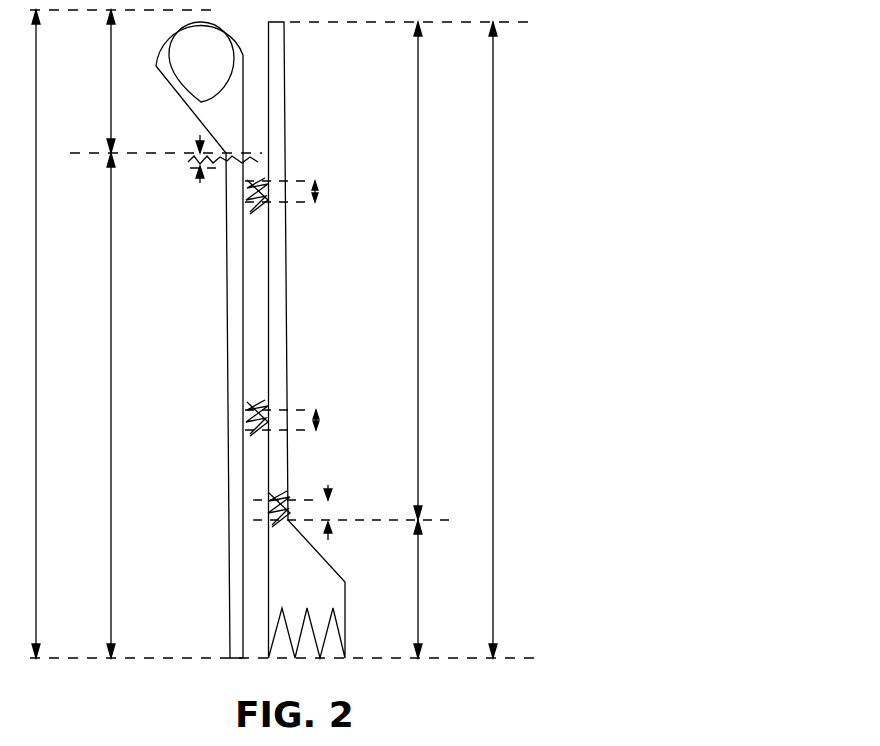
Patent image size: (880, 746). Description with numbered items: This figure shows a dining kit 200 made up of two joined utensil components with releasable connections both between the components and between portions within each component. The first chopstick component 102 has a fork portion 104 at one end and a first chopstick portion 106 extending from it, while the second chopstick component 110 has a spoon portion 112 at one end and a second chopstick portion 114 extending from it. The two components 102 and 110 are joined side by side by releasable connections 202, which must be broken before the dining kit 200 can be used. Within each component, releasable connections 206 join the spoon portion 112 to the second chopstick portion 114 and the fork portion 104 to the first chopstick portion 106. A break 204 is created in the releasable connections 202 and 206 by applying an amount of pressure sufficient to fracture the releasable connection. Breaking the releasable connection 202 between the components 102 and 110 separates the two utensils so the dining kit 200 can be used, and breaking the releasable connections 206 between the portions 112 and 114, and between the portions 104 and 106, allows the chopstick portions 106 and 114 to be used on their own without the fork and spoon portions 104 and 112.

The dining kit 200 is at (580, 102).
The first chopstick component 102 is at (495, 343).
The fork portion 104 is at (421, 583).
The first chopstick portion 106 is at (420, 305).
The second chopstick component 110 is at (38, 343).
The spoon portion 112 is at (111, 60).
The second chopstick portion 114 is at (113, 365).
The releasable connections 202 is at (317, 192).
The break 204 is at (193, 165).
The releasable connections 206 is at (352, 545).